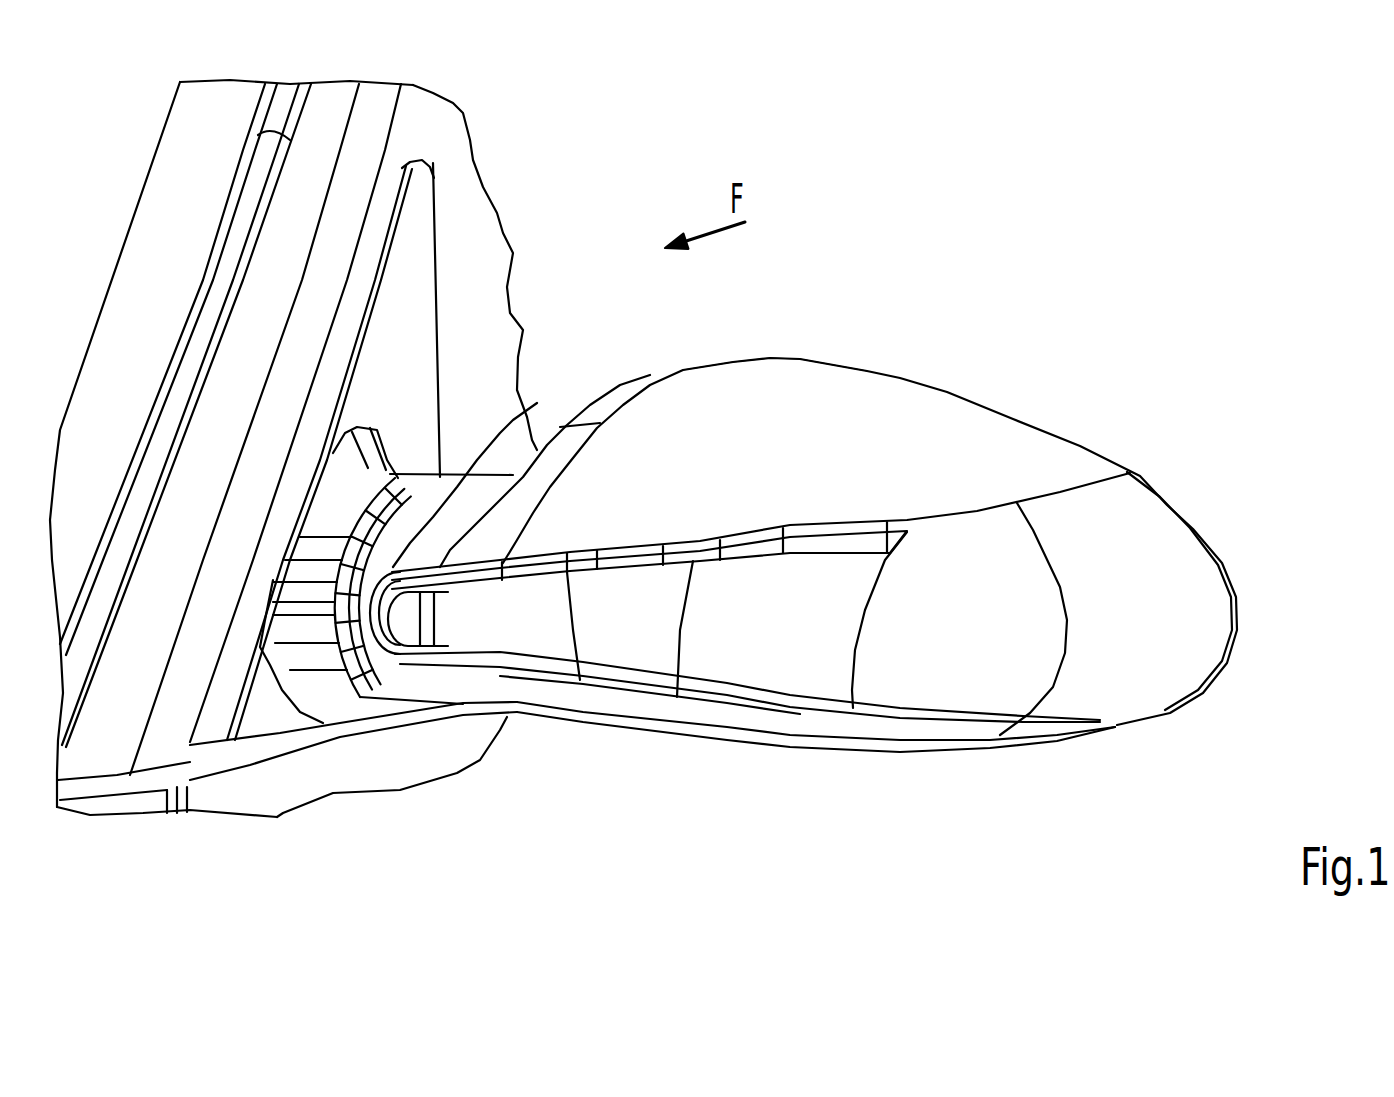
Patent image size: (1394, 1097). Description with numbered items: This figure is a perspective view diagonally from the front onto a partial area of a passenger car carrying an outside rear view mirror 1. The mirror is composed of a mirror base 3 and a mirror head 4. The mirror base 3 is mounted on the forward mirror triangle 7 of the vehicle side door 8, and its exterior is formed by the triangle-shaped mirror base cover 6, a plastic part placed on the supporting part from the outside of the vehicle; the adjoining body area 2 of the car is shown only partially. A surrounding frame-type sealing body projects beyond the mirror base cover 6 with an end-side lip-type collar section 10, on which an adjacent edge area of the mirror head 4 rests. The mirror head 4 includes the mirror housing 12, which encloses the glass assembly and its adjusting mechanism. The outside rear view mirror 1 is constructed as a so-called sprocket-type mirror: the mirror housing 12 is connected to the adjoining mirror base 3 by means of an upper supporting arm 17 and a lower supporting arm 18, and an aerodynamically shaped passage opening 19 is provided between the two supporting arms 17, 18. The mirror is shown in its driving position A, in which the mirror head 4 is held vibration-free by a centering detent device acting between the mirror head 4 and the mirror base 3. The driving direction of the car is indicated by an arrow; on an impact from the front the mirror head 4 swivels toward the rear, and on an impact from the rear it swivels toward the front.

The outside rear view mirror 1 is at (950, 387).
The vehicle door / A-pillar panel 2 is at (407, 112).
The mirror base 3 is at (440, 313).
The mirror head 4 is at (1163, 713).
The mirror base cover 6 is at (417, 397).
The forward mirror triangle 7 is at (443, 440).
The vehicle side door 8 is at (347, 347).
The lip-type collar section 10 is at (320, 700).
The mirror housing 12 is at (827, 365).
The upper supporting arm 17 is at (537, 403).
The lower supporting arm 18 is at (492, 690).
The passage opening 19 is at (520, 617).
The driving position A is at (1200, 531).